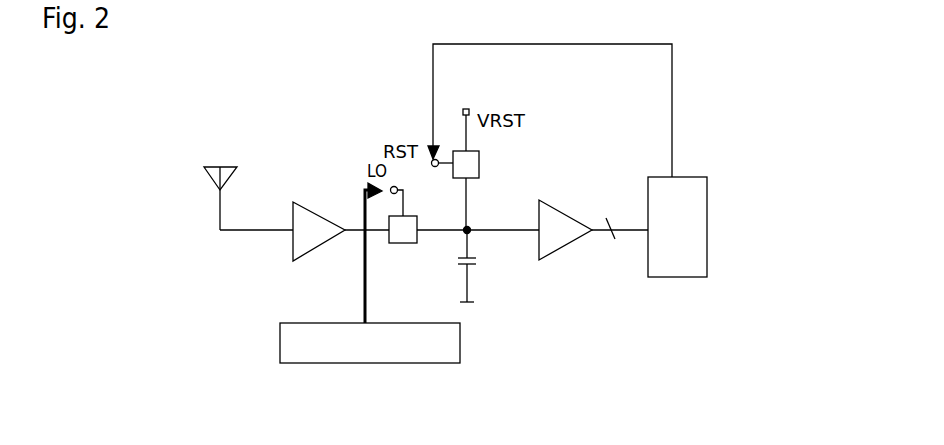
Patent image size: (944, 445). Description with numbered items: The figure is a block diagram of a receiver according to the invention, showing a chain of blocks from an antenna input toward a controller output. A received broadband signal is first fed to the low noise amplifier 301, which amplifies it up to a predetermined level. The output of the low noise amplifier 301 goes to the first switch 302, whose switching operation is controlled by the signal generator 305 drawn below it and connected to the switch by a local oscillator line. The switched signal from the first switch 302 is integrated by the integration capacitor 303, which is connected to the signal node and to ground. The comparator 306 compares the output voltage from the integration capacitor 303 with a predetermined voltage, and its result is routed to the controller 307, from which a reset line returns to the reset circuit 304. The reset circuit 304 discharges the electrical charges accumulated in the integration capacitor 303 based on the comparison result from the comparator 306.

The low noise amplifier 301 is at (306, 200).
The first switch 302 is at (405, 244).
The integration capacitor 303 is at (455, 262).
The reset circuit 304 is at (479, 165).
The signal generator 305 is at (360, 364).
The comparator 306 is at (540, 262).
The controller 307 is at (665, 278).